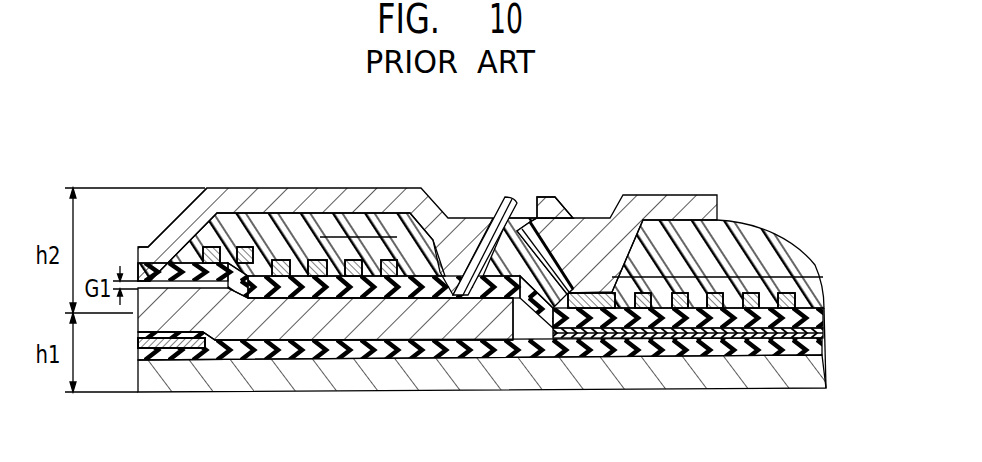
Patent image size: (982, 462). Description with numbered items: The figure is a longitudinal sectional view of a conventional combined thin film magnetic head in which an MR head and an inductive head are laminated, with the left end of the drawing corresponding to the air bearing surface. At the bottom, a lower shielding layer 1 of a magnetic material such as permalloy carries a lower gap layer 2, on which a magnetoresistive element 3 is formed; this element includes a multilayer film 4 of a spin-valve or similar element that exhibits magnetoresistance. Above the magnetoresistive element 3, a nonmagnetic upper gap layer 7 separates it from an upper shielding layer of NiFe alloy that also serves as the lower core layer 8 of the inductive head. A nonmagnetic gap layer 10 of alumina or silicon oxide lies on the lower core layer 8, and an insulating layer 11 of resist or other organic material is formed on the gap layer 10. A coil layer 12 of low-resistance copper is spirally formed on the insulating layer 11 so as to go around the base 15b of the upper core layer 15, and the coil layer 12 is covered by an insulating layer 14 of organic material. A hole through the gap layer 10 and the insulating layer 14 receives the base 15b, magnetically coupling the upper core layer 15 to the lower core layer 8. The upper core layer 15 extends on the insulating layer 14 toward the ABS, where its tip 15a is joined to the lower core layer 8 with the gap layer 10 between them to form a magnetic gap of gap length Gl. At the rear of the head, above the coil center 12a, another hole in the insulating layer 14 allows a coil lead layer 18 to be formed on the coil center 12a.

The lower shielding layer 1 is at (797, 367).
The lower gap layer 2 is at (280, 355).
The magnetoresistive element 3 is at (130, 334).
The multilayer film 4 is at (189, 350).
The upper gap layer 7 is at (350, 342).
The lower core layer 8 is at (487, 325).
The gap layer 10 is at (407, 302).
The insulating layer 11 is at (428, 282).
The coil layer 12 is at (303, 240).
The coil center 12a is at (610, 296).
The insulating layer 14 is at (373, 227).
The upper core layer 15 is at (243, 197).
The tip 15a is at (158, 250).
The base 15b is at (473, 253).
The coil lead layer 18 is at (553, 203).